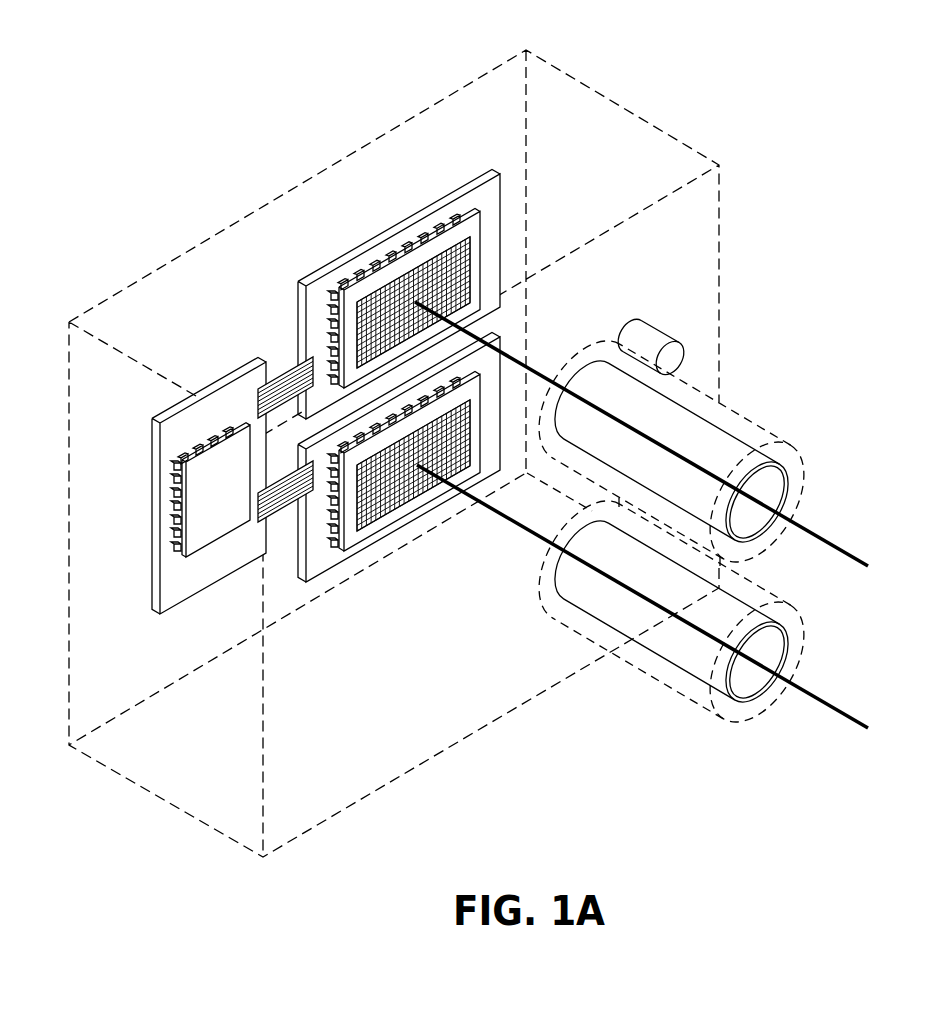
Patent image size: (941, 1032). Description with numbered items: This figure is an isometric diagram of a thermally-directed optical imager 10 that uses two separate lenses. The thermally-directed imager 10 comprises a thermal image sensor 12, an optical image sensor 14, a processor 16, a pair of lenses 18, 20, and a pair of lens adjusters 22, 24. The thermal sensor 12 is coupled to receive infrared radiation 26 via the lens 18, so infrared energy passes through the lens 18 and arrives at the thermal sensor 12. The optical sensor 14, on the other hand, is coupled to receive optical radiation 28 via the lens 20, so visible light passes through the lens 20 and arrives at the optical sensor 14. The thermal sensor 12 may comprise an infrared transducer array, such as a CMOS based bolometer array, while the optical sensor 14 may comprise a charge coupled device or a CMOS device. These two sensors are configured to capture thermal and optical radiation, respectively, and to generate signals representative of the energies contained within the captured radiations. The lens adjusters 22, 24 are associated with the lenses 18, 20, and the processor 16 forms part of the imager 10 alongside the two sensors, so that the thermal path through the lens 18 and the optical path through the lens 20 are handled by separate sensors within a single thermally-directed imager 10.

The thermally-directed optical imager 10 is at (760, 164).
The thermal image sensor 12 is at (497, 193).
The optical image sensor 14 is at (497, 358).
The processor 16 is at (156, 565).
The lens 18 is at (773, 443).
The lens 20 is at (803, 637).
The lens adjuster 22 is at (650, 326).
The lens adjuster 24 is at (590, 509).
The infrared radiation 26 is at (820, 533).
The optical radiation 28 is at (850, 713).